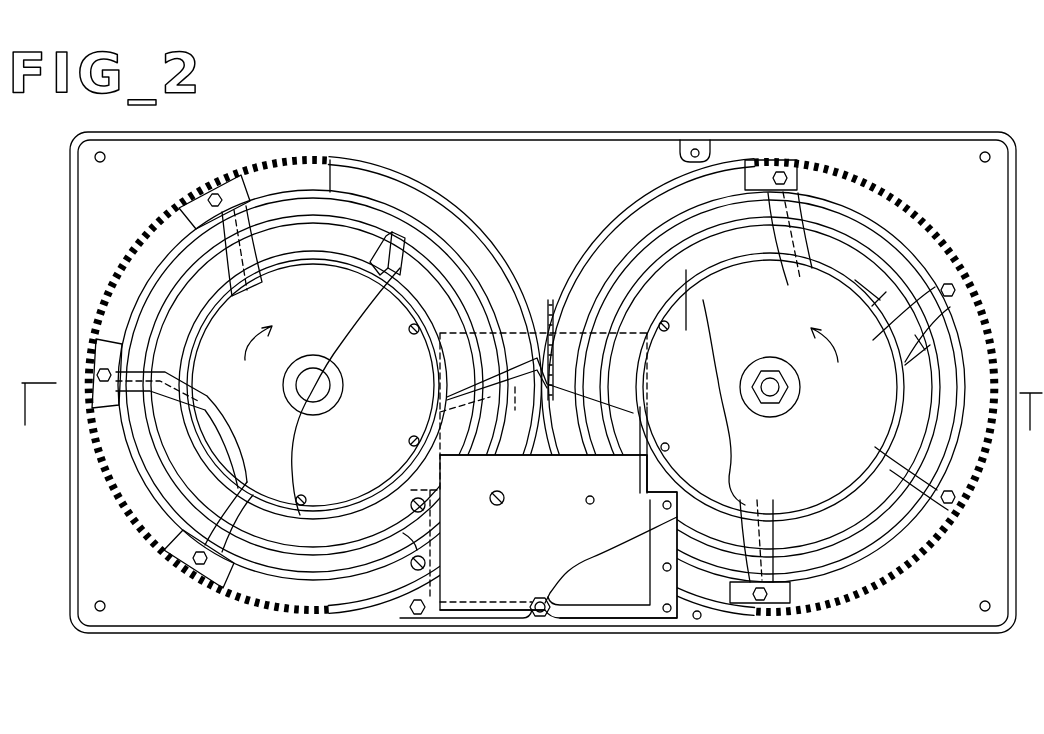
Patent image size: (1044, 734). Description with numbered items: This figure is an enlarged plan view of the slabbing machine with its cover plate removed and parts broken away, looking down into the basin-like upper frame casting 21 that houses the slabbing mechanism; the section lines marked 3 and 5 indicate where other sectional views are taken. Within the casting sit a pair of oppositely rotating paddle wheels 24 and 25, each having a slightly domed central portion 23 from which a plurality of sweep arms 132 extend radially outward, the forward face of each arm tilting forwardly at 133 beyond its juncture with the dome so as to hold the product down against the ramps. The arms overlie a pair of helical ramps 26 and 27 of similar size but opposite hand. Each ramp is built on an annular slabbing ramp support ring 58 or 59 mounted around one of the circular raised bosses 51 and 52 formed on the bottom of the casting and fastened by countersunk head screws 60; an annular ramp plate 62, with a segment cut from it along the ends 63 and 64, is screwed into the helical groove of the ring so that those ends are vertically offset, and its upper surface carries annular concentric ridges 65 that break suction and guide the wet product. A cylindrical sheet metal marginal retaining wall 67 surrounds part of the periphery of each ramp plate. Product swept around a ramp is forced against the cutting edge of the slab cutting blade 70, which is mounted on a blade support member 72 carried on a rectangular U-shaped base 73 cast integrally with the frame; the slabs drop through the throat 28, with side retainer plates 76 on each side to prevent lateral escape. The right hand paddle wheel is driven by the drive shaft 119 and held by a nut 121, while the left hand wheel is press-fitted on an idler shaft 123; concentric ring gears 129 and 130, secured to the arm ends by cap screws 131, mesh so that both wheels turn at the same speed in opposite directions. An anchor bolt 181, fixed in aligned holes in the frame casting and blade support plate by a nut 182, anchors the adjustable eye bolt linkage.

The upper frame casting 21 is at (73, 208).
The section line 3- 3 is at (531, 393).
The section line 5- 5 is at (890, 325).
The domed central portion 23 is at (314, 327).
The left hand paddle wheel 24 is at (241, 434).
The right hand paddle wheel 25 is at (790, 449).
The helical ramp 26 is at (284, 219).
The helical ramp 27 is at (762, 381).
The throat 28 is at (577, 422).
The circular raised boss 51 is at (374, 361).
The circular raised boss 52 is at (688, 427).
The slabbing ramp support ring 58 is at (388, 482).
The slabbing ramp support ring 59 is at (700, 297).
The countersunk head screws 60 is at (409, 329).
The helical ramp plate 62 is at (300, 566).
The end of ramp plate 63 is at (520, 405).
The end of ramp plate 64 is at (335, 540).
The annular concentric ridges 65 is at (475, 248).
The marginal retaining wall 67 is at (440, 205).
The slab cutting blade 70 is at (460, 487).
The blade support member 72 is at (533, 540).
The U-shaped base 73 is at (665, 575).
The side retainer plates 76 is at (450, 443).
The drive shaft 119 is at (778, 391).
The nut 121 is at (784, 378).
The idler shaft 123 is at (308, 387).
The ring gear 129 is at (185, 215).
The ring gear 130 is at (885, 220).
The cap screws 131 is at (220, 197).
The sweep arms 132 is at (240, 250).
The forwardly tilted face 133 is at (405, 242).
The anchor bolt 181 is at (546, 612).
The nut 182 is at (541, 617).